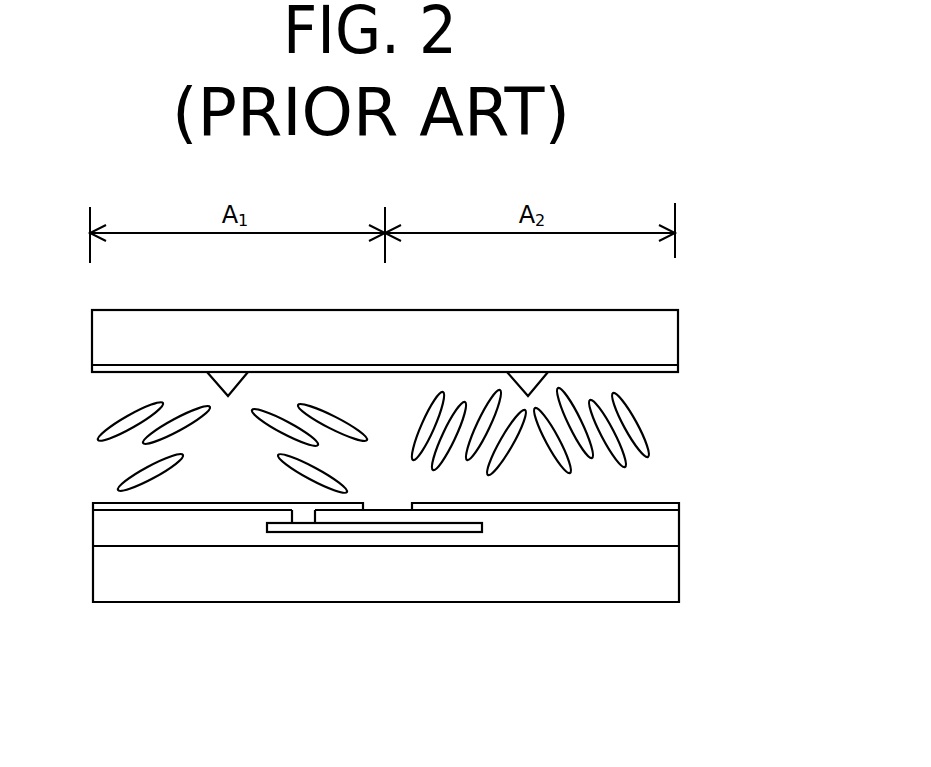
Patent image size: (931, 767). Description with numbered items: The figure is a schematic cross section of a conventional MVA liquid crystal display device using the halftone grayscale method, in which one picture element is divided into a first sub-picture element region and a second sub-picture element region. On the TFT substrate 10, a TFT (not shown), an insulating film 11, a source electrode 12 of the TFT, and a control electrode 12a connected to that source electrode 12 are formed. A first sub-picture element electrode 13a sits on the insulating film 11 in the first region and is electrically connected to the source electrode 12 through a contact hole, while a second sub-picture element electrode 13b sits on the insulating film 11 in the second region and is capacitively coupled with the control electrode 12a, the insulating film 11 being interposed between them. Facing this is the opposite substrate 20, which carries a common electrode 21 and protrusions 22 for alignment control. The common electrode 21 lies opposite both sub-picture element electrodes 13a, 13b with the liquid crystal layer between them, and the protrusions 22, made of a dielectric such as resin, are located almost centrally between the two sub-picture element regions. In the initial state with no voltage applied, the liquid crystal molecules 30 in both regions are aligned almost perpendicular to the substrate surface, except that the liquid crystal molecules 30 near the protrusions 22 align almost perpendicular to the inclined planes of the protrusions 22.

The TFT substrate 10 is at (670, 575).
The insulating film 11 is at (670, 525).
The source electrode 12 is at (337, 532).
The control electrode 12a is at (455, 532).
The first sub-picture element electrode 13a is at (190, 512).
The second sub-picture element electrode 13b is at (553, 508).
The opposite substrate 20 is at (668, 337).
The common electrode 21 is at (658, 372).
The protrusions for alignment control 22 is at (232, 383).
The liquid crystal molecules 30 is at (117, 423).